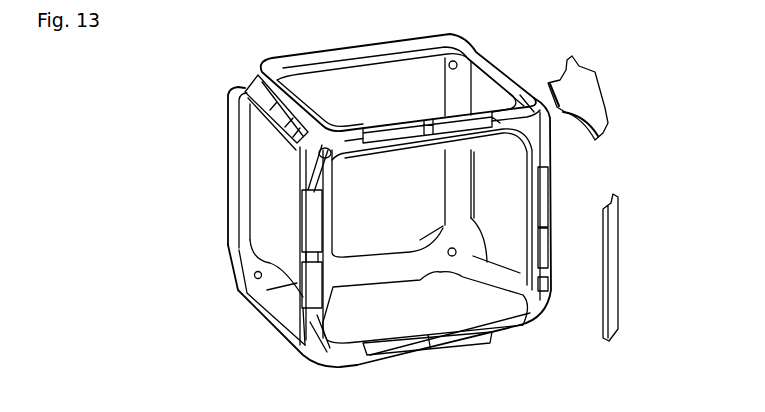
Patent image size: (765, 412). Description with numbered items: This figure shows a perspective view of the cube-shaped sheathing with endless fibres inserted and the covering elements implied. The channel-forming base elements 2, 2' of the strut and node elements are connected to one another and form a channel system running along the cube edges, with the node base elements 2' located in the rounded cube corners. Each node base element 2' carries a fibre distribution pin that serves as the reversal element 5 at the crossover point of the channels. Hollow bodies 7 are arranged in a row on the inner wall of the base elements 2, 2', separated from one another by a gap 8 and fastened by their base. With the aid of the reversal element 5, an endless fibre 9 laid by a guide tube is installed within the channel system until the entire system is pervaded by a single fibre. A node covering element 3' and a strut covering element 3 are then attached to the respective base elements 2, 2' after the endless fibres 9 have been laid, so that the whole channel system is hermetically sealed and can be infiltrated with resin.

The channel-forming base element 2 is at (207, 167).
The node base element 2' is at (264, 303).
The strut covering element 3 is at (650, 267).
The node covering element 3' is at (608, 98).
The reversal element 5 is at (543, 146).
The hollow body 7 is at (386, 138).
The gap 8 is at (423, 147).
The endless fibre 9 is at (333, 187).